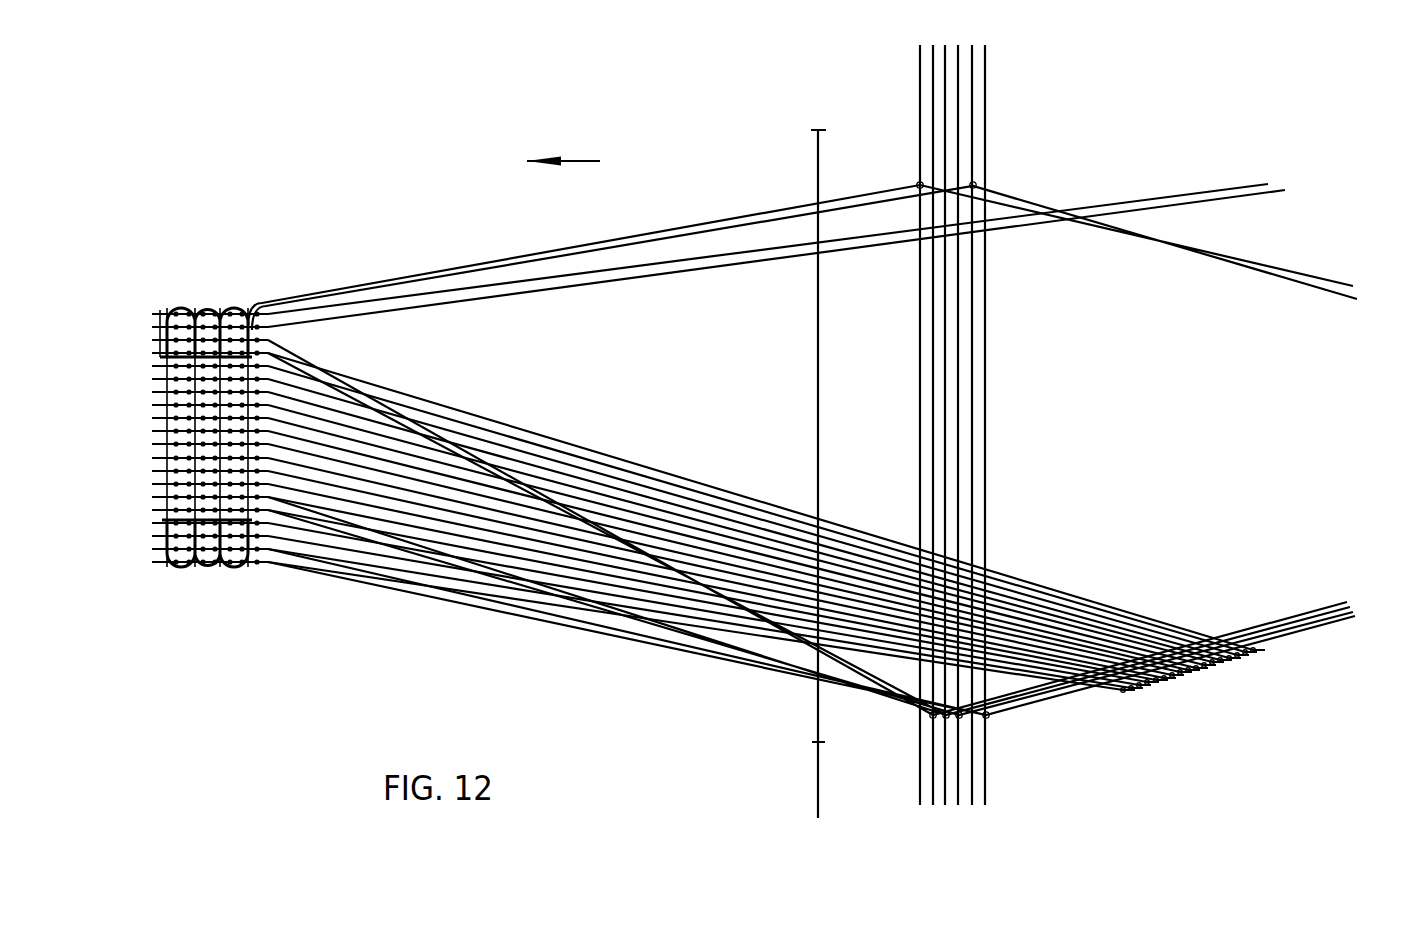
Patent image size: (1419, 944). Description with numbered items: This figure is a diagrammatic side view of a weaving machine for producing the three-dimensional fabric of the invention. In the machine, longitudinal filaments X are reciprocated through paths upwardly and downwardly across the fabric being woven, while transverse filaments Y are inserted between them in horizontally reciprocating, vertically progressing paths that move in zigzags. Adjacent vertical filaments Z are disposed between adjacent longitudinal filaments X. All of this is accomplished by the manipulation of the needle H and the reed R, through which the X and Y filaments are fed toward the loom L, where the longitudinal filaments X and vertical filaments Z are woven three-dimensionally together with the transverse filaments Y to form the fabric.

The transverse filaments Y is at (240, 307).
The loom L is at (579, 164).
The reed R is at (818, 793).
The needle H is at (997, 806).
The longitudinal filaments X is at (801, 452).
The vertical filaments Z is at (1361, 278).